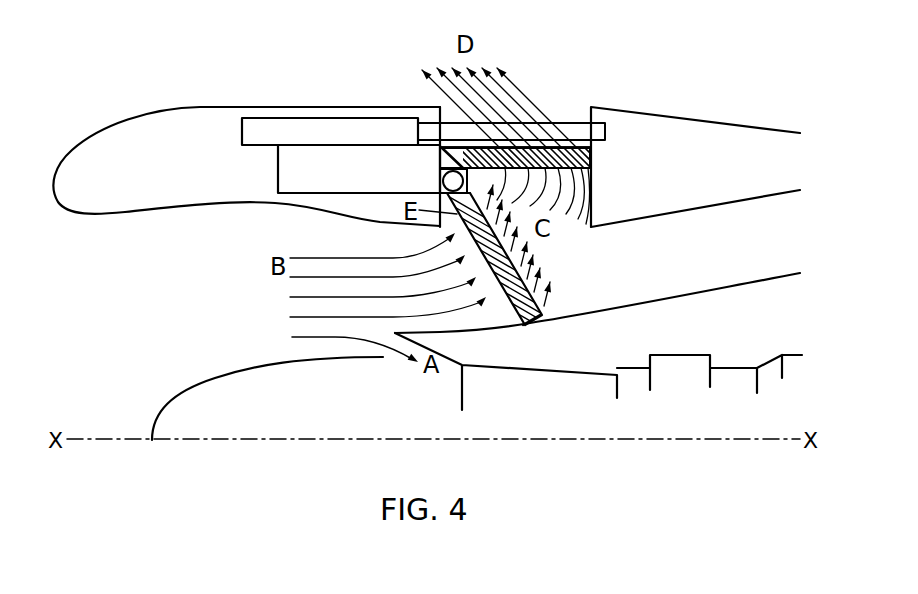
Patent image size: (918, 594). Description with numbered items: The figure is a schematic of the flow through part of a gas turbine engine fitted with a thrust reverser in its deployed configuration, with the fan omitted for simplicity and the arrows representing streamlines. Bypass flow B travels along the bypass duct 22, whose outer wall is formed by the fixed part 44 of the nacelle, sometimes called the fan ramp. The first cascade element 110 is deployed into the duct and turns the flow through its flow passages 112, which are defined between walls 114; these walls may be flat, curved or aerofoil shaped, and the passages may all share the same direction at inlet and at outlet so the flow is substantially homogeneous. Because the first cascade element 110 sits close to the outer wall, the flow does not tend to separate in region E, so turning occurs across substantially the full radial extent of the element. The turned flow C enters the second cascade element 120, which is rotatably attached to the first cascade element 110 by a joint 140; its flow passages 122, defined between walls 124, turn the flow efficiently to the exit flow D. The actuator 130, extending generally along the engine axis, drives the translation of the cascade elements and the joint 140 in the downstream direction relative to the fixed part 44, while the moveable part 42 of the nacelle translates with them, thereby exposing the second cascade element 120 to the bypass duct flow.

The bypass duct 22 is at (476, 350).
The moveable part of the nacelle 42 is at (695, 167).
The fixed part of the nacelle 44 is at (246, 167).
The first cascade element 110 is at (540, 316).
The flow passages 112 is at (522, 323).
The walls 114 is at (460, 216).
The second cascade element 120 is at (588, 175).
The flow passages 122 is at (574, 148).
The walls 124 is at (565, 147).
The actuator 130 is at (345, 128).
The joint 140 is at (441, 181).